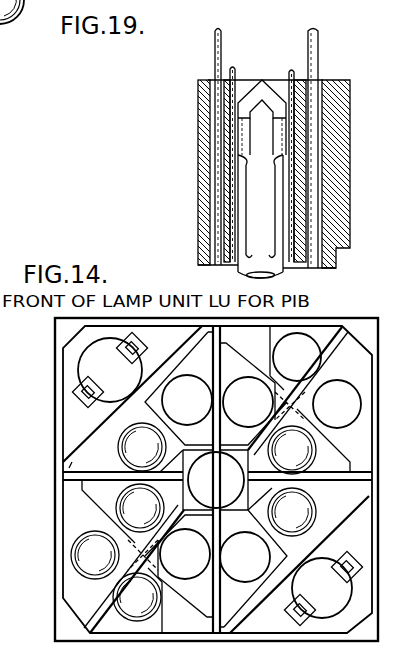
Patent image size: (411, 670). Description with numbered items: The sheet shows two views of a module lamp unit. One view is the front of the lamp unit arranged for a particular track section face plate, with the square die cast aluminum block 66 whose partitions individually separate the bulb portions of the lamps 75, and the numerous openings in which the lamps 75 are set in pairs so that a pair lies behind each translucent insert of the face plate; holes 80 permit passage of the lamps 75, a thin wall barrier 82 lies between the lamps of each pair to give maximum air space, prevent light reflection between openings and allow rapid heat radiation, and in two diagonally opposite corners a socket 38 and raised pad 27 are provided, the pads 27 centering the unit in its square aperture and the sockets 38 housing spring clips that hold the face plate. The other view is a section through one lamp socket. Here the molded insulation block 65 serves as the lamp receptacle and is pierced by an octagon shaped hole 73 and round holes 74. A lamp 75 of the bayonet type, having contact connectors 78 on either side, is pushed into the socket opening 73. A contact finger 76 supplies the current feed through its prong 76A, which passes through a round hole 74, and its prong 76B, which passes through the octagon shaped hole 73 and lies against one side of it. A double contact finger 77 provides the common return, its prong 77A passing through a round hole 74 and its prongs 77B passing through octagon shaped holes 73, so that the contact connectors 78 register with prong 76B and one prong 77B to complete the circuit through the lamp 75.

In FIG. 19, the molded insulation block 65 is at (340, 190).
In FIG. 19, the round hole 74 is at (212, 98).
In FIG. 19, the prong 76A is at (216, 50).
In FIG. 19, the prong 76B is at (235, 71).
In FIG. 19, the prong 77A is at (320, 53).
In FIG. 19, the prong 77B is at (293, 72).
In FIG. 19, the octagon shaped hole 73 is at (242, 88).
In FIG. 19, the contact connector 78 is at (272, 250).
In FIG. 19, the lamp 75 is at (280, 273).
In FIG. 14, the lamp 75 is at (122, 503).
In FIG. 19, the contact finger 76 is at (222, 263).
In FIG. 19, the double contact finger 77 is at (305, 269).
In FIG. 14, the die cast aluminum block 66 is at (55, 425).
In FIG. 14, the barrier 82 is at (78, 471).
In FIG. 14, the socket 38 is at (90, 356).
In FIG. 14, the raised pad 27 is at (73, 408).
In FIG. 14, the hole 80 is at (240, 390).